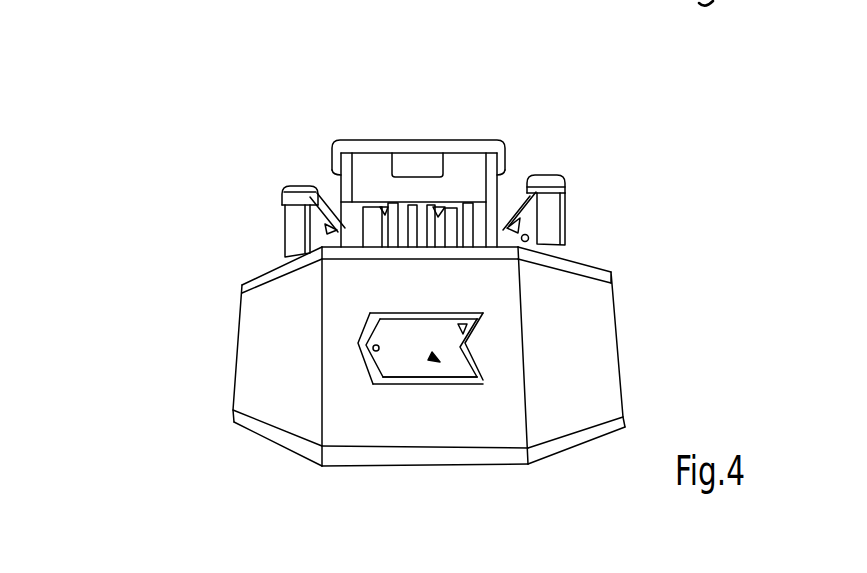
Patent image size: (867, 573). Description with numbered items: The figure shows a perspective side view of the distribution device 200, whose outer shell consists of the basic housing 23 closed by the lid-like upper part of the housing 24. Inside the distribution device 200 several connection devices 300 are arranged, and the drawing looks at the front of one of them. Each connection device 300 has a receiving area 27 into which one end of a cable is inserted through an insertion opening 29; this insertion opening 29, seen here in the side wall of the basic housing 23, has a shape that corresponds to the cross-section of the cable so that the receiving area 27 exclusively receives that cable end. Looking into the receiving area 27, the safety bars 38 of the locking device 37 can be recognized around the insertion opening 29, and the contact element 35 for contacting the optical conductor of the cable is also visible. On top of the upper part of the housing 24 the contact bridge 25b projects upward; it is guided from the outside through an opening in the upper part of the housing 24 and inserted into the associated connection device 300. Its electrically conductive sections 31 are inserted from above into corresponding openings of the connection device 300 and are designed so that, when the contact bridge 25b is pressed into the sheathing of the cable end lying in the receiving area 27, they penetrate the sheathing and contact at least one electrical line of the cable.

The distribution device 200 is at (701, 206).
The basic housing 23 is at (238, 331).
The upper part of the housing 24 is at (256, 277).
The contact bridge 25b is at (282, 205).
The receiving area 27 is at (434, 358).
The insertion opening 29 is at (362, 372).
The electrically conductive sections 31 is at (385, 208).
The contact element 35 is at (401, 380).
The locking device 37 is at (370, 316).
The safety bars 38 is at (362, 352).
The connection device 300 is at (487, 378).